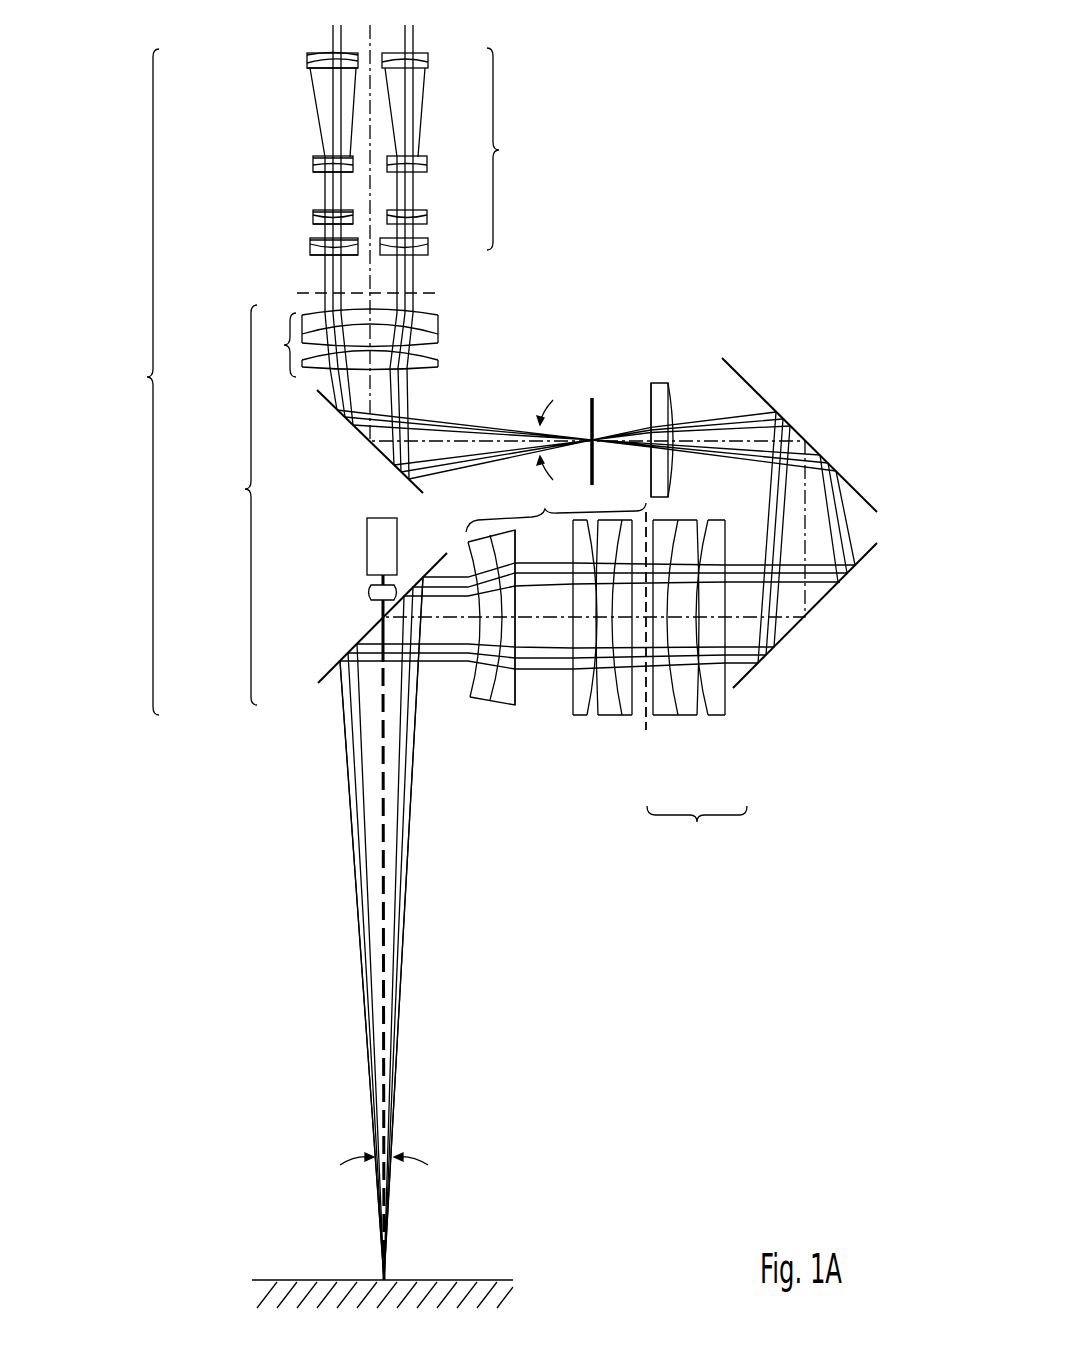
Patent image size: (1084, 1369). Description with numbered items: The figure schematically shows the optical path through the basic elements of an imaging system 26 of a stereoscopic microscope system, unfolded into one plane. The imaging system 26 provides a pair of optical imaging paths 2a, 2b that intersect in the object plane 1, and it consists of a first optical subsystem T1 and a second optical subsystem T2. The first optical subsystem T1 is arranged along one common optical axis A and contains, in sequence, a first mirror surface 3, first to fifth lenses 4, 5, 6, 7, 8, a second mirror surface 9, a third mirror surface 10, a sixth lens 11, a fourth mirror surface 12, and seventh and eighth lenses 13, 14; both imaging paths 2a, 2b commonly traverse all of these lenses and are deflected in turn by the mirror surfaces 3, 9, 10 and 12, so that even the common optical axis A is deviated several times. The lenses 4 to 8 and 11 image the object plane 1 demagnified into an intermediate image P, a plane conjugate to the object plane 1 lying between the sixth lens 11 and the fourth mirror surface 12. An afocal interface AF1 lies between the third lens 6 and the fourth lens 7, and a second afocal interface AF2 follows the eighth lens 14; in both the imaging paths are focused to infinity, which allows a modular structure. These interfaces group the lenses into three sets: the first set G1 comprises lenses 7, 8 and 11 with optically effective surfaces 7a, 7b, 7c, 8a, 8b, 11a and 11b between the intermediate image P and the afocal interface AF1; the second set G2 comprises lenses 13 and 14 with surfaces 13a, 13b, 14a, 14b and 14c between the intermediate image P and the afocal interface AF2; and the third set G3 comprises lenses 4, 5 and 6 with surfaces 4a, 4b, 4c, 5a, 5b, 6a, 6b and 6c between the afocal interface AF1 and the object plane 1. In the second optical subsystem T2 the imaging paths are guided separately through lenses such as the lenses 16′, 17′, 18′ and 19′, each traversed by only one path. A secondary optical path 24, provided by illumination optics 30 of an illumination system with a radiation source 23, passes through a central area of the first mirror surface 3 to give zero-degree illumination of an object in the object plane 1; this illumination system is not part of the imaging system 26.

The object plane 1 is at (472, 1280).
The optical imaging path 2a is at (372, 1110).
The optical imaging path 2b is at (396, 1112).
The first optical mirror surface 3 is at (331, 670).
The first optical lens 4 is at (503, 710).
The optically effective surface 4a is at (466, 700).
The optically effective surface 4b is at (491, 703).
The optically effective surface 4c is at (515, 705).
The second optical lens 5 is at (580, 718).
The optically effective surface 5a is at (573, 718).
The optically effective surface 5b is at (587, 718).
The third optical lens 6 is at (598, 718).
The optically effective surface 6a is at (613, 718).
The optically effective surface 6b is at (622, 718).
The optically effective surface 6c is at (634, 718).
The fourth optical lens 7 is at (670, 718).
The optically effective surface 7a is at (655, 718).
The optically effective surface 7b is at (680, 718).
The optically effective surface 7c is at (697, 718).
The fifth optical lens 8 is at (722, 718).
The optically effective surface 8a is at (708, 718).
The optically effective surface 8b is at (727, 718).
The second optical mirror surface 9 is at (826, 598).
The third optical mirror surface 10 is at (745, 385).
The sixth optical lens 11 is at (655, 382).
The optically effective surface 11a is at (669, 392).
The optically effective surface 11b is at (650, 392).
The fourth optical mirror surface 12 is at (362, 434).
The seventh optical lens 13 is at (440, 364).
The optically effective surface 13a is at (432, 368).
The optically effective surface 13b is at (440, 359).
The eighth optical lens 14 is at (440, 314).
The optically effective surface 14a is at (442, 345).
The optically effective surface 14b is at (440, 329).
The optically effective surface 14c is at (434, 315).
The optical lens 16′ is at (428, 246).
The optical lens 17′ is at (427, 218).
The optical lens 18′ is at (427, 165).
The optical lens 19′ is at (430, 62).
The radiation source 23 is at (367, 540).
The secondary optical path 24 is at (395, 835).
The imaging system 26 is at (142, 382).
The illumination optics 30 is at (367, 594).
The common optical axis A is at (372, 387).
The intermediate image P is at (590, 408).
The afocal interface AF1 is at (645, 520).
The afocal interface AF2 is at (297, 293).
The first set G1 is at (697, 828).
The second set G2 is at (276, 345).
The third set G3 is at (556, 508).
The first optical subsystem T1 is at (239, 505).
The second optical subsystem T2 is at (503, 149).